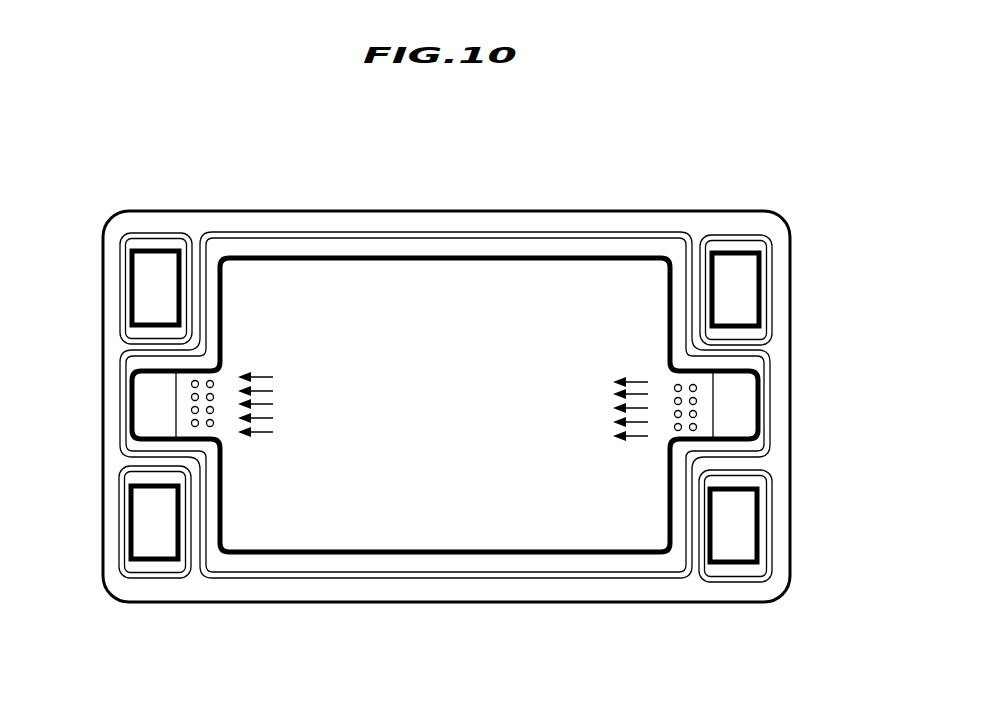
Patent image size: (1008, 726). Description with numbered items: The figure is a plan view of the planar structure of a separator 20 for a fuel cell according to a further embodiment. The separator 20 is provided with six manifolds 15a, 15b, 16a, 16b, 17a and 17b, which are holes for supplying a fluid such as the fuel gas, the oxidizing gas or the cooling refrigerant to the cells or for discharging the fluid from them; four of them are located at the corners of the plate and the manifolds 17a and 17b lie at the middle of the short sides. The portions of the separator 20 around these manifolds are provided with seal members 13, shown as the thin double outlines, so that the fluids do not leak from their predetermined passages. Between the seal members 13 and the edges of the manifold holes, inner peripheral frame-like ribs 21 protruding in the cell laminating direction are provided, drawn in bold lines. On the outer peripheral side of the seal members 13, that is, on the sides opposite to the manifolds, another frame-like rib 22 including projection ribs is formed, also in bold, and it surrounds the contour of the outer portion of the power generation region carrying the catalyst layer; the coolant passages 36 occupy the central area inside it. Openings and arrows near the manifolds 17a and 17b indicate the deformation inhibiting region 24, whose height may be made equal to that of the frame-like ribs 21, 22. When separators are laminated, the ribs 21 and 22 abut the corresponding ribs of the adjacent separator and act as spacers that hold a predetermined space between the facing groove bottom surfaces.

The seal member 13 is at (152, 233).
The separator 20 is at (358, 590).
The frame-like rib 21 is at (742, 258).
The frame-like rib 22 is at (360, 265).
The deformation inhibiting region 24 is at (665, 385).
The coolant passage 36 is at (430, 409).
The manifold 15a is at (170, 538).
The manifold 15b is at (752, 303).
The manifold 16a is at (750, 539).
The manifold 16b is at (172, 300).
The manifold 17a is at (751, 421).
The manifold 17b is at (172, 419).